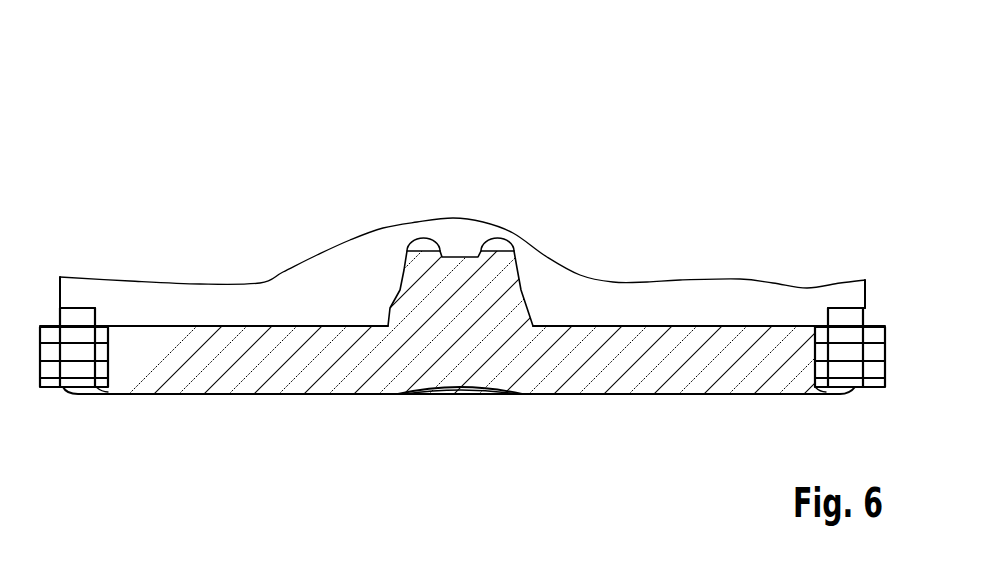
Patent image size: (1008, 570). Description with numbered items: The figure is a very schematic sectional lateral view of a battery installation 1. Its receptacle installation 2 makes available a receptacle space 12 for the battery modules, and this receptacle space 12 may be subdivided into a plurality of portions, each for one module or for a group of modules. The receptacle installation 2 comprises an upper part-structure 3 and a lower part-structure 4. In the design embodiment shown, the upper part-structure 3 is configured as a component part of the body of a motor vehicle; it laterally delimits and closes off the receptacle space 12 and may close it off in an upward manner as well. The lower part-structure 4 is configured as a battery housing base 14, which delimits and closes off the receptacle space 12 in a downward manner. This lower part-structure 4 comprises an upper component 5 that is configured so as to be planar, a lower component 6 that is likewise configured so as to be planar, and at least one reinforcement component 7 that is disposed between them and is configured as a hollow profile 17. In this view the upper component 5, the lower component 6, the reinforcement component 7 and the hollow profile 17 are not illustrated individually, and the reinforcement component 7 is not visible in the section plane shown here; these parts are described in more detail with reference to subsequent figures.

The battery installation 1 is at (312, 117).
The receptacle installation 2 is at (222, 165).
The upper part-structure 3 is at (75, 257).
The lower part-structure 4 is at (210, 423).
The upper component 5 is at (440, 395).
The lower component 6 is at (428, 395).
The reinforcement component 7 is at (478, 413).
The receptacle space 12 is at (438, 342).
The battery housing base 14 is at (287, 398).
The hollow profile 17 is at (498, 400).